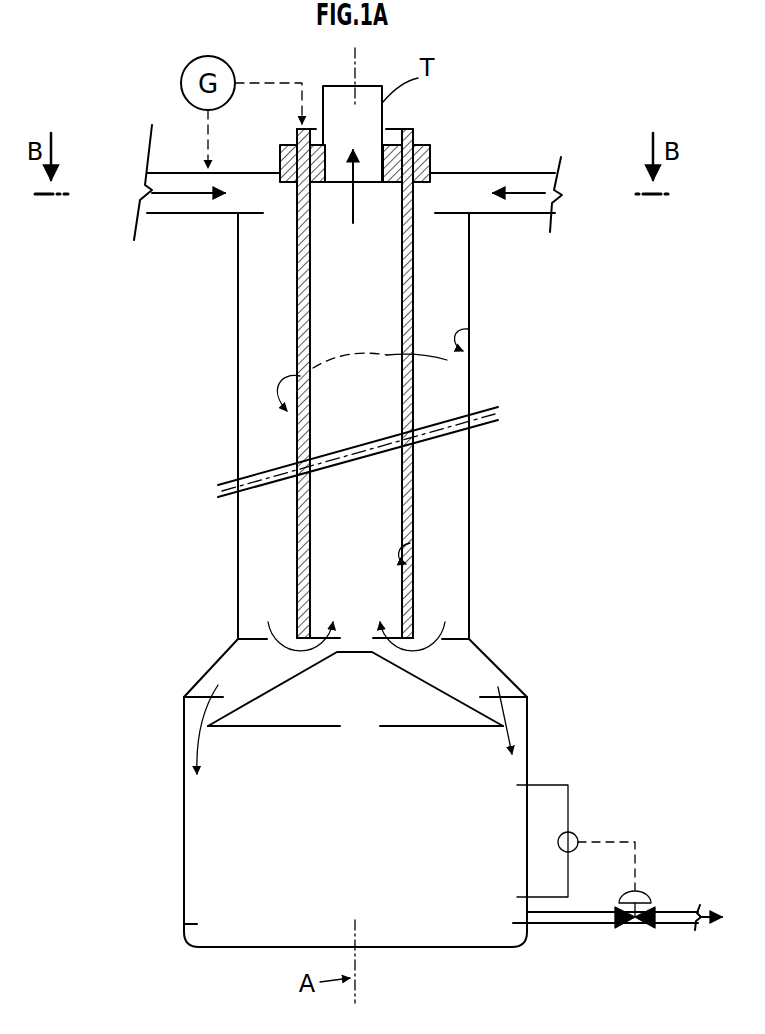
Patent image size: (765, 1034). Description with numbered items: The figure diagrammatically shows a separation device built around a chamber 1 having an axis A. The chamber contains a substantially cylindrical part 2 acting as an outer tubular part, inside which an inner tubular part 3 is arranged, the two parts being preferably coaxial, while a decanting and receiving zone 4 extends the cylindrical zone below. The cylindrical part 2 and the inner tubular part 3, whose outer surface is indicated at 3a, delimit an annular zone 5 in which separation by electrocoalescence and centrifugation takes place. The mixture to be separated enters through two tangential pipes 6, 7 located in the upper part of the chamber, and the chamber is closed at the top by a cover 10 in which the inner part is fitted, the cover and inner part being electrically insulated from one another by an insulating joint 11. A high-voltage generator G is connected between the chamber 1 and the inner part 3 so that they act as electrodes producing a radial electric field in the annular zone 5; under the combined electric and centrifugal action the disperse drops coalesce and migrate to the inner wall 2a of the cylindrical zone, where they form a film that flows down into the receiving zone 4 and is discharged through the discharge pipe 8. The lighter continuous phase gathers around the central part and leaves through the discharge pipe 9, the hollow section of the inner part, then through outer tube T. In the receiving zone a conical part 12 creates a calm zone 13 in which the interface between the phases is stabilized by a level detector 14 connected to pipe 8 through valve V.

The chamber 1 is at (140, 358).
The cylindrical part 2 is at (472, 298).
The inner wall 2a is at (468, 329).
The inner tubular part 3 is at (413, 513).
The outer wall of inner pipe 3a is at (410, 543).
The decanting and receiving zone 4 is at (528, 718).
The annular zone 5 is at (443, 467).
The pipe 6 is at (517, 183).
The pipe 7 is at (170, 180).
The discharge pipe 8 is at (678, 912).
The discharge pipe 9 is at (366, 322).
The cover 10 is at (445, 172).
The insulating joint 11 is at (430, 150).
The conical part 12 is at (443, 688).
The calm zone 13 is at (343, 867).
The level detector 14 is at (589, 806).